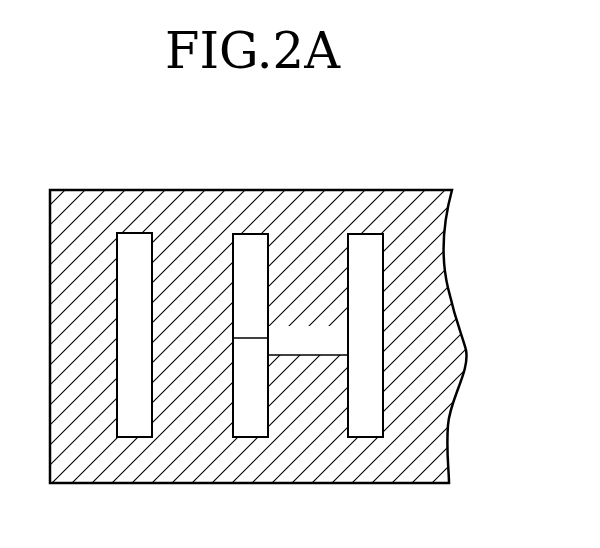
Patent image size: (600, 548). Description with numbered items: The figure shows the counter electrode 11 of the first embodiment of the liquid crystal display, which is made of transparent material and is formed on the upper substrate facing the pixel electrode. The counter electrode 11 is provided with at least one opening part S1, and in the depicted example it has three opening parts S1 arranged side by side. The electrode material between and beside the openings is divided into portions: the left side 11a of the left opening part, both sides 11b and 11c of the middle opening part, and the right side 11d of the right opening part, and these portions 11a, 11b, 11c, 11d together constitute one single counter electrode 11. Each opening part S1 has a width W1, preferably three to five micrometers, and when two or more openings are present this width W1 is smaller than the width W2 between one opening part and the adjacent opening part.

The counter electrode 11 is at (448, 418).
The left side of the left opening part 11a is at (87, 310).
The side of the middle opening part 11b is at (197, 310).
The side of the middle opening part 11c is at (311, 308).
The right side of the right opening part 11d is at (415, 310).
The opening part S1 is at (367, 437).
The width of the opening part W1 is at (250, 328).
The width between adjacent opening parts W2 is at (308, 341).